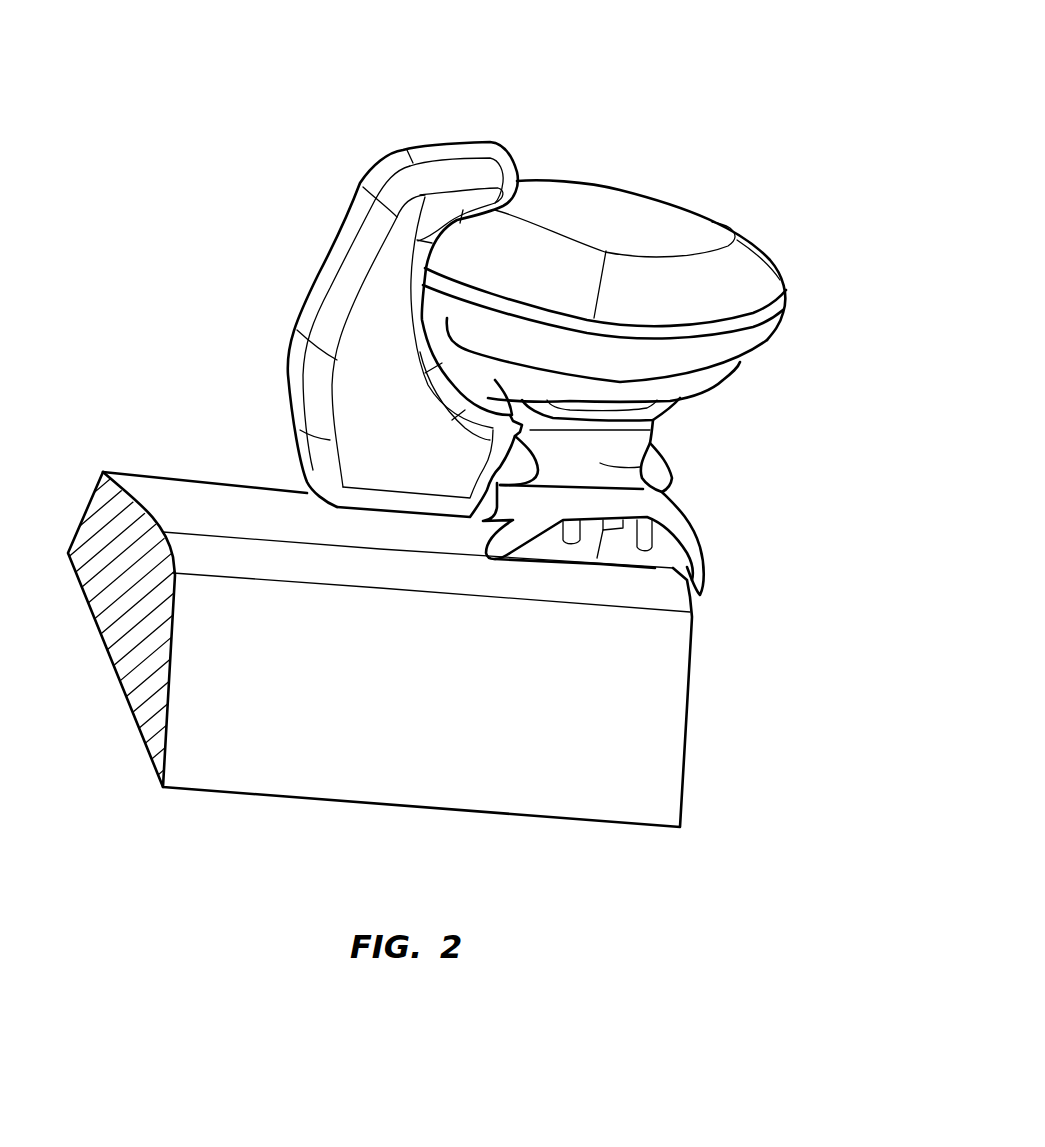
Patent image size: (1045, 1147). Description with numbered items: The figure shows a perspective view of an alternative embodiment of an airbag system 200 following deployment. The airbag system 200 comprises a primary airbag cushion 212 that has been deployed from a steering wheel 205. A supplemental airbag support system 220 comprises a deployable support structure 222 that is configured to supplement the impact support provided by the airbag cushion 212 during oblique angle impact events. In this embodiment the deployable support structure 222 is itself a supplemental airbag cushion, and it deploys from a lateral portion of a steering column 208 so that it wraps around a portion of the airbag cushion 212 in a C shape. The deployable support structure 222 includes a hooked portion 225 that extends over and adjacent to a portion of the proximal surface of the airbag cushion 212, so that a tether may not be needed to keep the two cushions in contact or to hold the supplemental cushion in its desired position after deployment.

The airbag system 200 is at (620, 303).
The steering wheel 205 is at (620, 271).
The steering column 208 is at (645, 466).
The primary airbag cushion 212 is at (710, 224).
The supplemental airbag support system 220 is at (312, 285).
The deployable support structure 222 is at (373, 353).
The hooked portion 225 is at (455, 153).